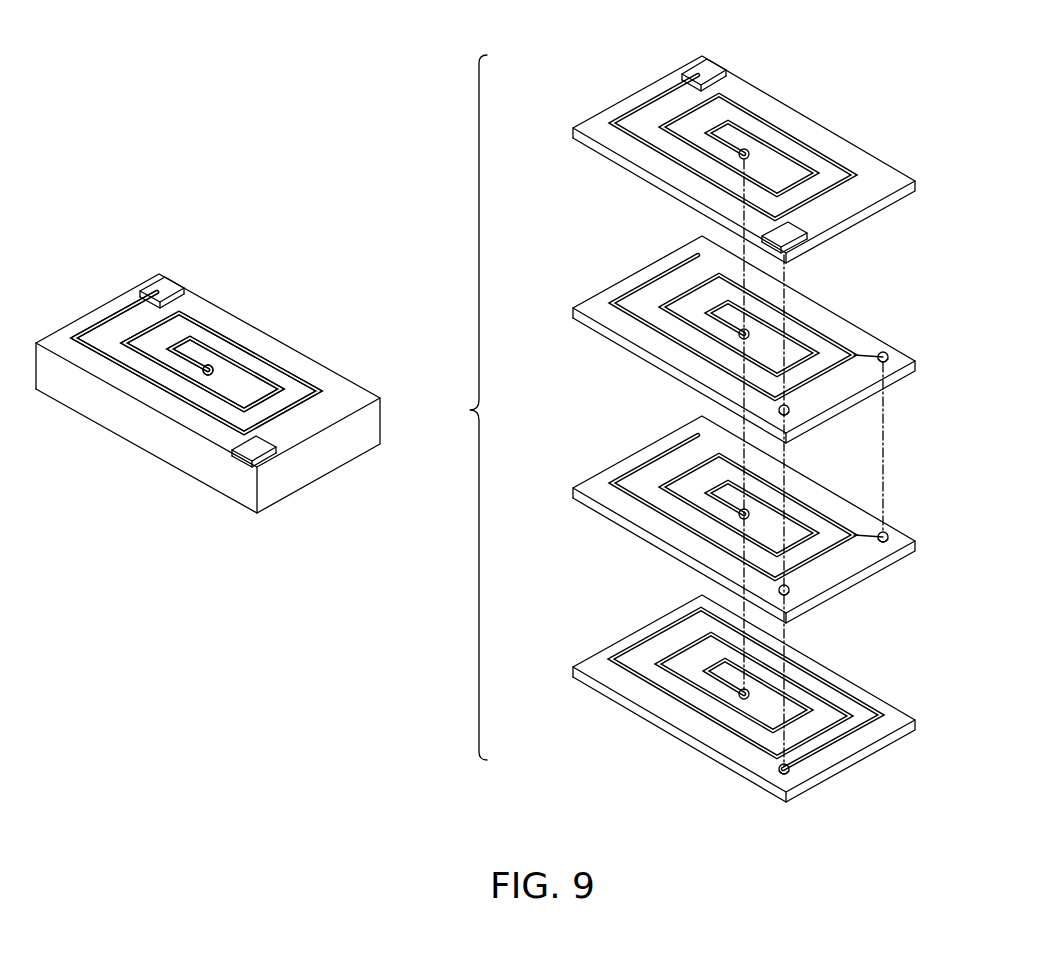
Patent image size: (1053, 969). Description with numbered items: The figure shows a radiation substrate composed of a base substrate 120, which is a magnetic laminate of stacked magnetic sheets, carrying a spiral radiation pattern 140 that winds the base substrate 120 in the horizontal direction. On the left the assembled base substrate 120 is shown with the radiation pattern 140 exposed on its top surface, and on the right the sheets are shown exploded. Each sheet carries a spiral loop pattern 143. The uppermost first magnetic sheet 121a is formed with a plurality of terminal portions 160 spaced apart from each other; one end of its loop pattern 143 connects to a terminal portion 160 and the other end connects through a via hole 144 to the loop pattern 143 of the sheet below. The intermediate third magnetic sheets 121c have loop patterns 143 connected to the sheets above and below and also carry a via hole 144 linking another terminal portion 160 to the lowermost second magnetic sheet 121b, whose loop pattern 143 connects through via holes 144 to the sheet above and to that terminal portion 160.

The base substrate 120 is at (147, 450).
The first magnetic sheet 121a is at (917, 183).
The second magnetic sheet 121b is at (917, 720).
The third magnetic sheet 121c is at (883, 393).
The radiation pattern 140 is at (327, 231).
The loop pattern 143 is at (198, 320).
The via hole 144 is at (209, 365).
The terminal portion 160 is at (167, 283).